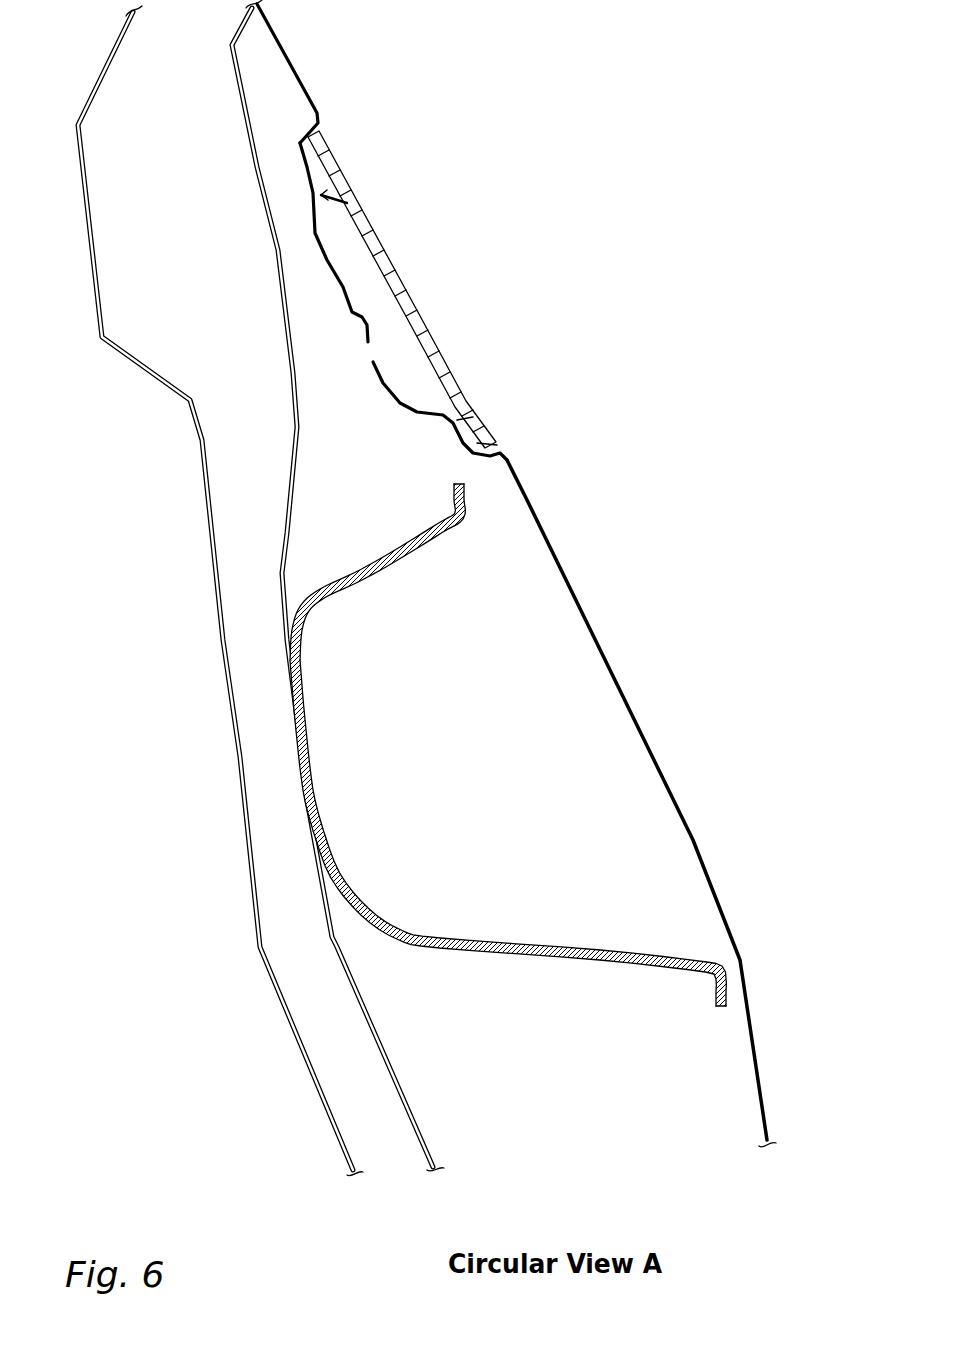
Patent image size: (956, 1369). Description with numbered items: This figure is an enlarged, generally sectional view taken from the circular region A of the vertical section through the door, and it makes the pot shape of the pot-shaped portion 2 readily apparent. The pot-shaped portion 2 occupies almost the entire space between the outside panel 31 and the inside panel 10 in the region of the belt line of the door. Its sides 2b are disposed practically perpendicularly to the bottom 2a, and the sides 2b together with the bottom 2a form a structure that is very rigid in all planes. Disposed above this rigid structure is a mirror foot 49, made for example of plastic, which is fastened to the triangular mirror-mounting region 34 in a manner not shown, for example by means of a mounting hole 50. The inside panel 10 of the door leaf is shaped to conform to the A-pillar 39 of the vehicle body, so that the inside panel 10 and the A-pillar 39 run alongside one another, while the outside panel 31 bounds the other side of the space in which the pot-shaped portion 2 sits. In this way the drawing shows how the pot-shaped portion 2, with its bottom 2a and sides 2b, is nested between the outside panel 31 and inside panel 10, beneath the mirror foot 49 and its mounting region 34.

The pot-shaped portion 2 is at (455, 769).
The bottom 2a is at (317, 768).
The sides 2b is at (398, 558).
The inside panel 10 is at (367, 1013).
The outside panel 31 is at (548, 535).
The triangular mirror-mounting region 34 is at (355, 315).
The A-pillar 39 is at (208, 557).
The mirror foot 49 is at (380, 267).
The mounting hole 50 is at (372, 352).